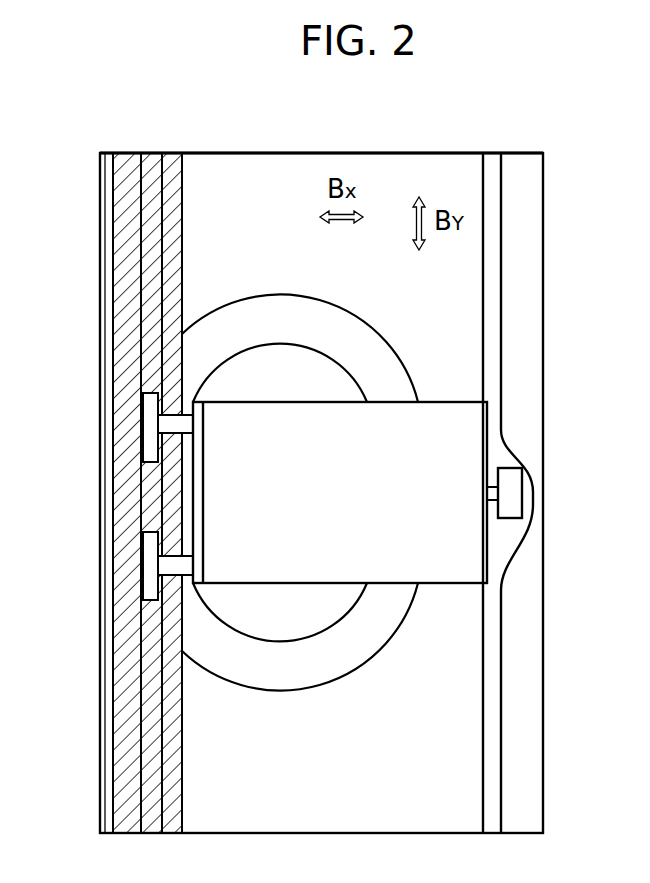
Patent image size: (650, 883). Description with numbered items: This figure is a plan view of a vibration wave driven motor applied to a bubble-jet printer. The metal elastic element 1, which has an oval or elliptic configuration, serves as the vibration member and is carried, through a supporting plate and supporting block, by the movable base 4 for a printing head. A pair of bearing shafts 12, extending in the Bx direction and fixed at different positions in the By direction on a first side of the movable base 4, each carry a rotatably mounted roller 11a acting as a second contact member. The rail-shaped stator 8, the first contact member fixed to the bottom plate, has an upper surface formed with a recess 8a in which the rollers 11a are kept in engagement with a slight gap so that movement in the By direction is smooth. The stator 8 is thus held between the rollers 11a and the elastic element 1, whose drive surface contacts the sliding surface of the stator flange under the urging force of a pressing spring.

The elastic element 1 is at (377, 627).
The movable base 4 is at (452, 428).
The rail-shaped stator 8 is at (123, 162).
The recess 8a is at (150, 158).
The roller 11a is at (148, 413).
The bearing shaft 12 is at (170, 378).